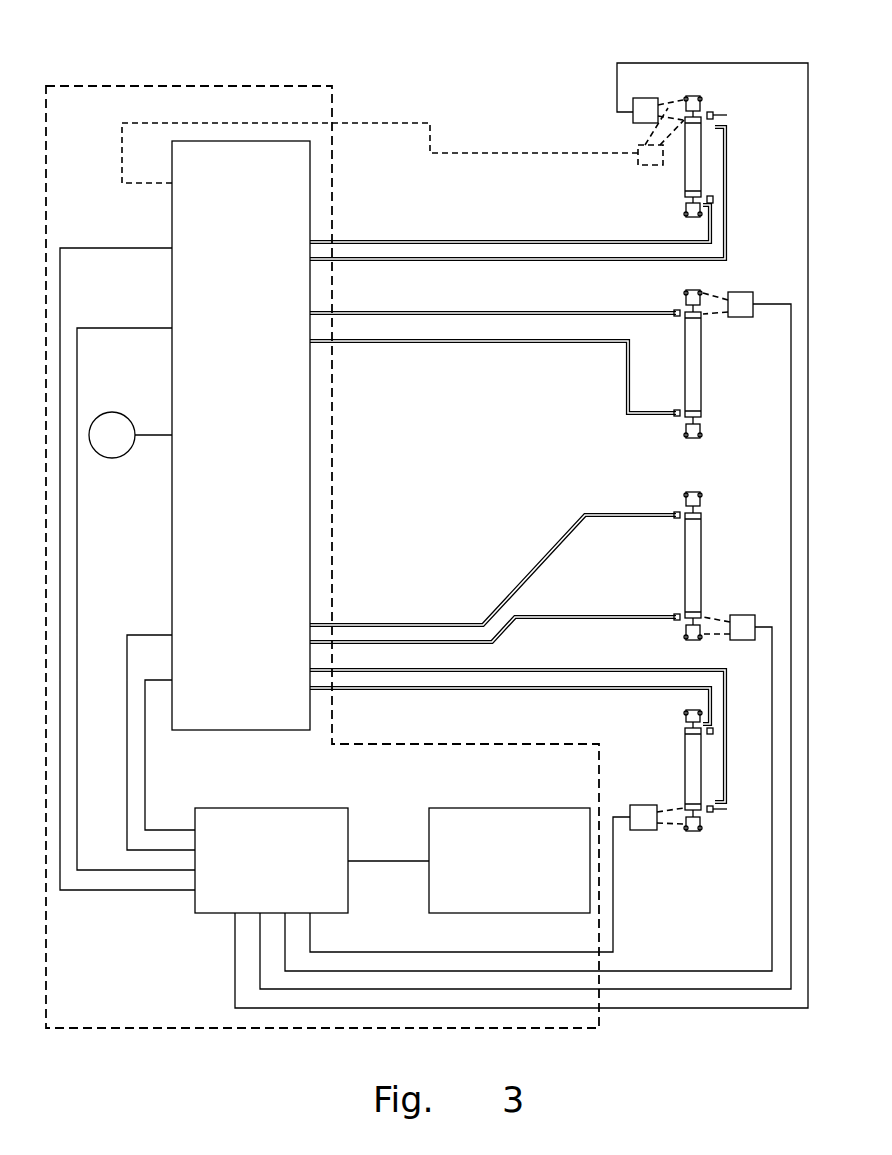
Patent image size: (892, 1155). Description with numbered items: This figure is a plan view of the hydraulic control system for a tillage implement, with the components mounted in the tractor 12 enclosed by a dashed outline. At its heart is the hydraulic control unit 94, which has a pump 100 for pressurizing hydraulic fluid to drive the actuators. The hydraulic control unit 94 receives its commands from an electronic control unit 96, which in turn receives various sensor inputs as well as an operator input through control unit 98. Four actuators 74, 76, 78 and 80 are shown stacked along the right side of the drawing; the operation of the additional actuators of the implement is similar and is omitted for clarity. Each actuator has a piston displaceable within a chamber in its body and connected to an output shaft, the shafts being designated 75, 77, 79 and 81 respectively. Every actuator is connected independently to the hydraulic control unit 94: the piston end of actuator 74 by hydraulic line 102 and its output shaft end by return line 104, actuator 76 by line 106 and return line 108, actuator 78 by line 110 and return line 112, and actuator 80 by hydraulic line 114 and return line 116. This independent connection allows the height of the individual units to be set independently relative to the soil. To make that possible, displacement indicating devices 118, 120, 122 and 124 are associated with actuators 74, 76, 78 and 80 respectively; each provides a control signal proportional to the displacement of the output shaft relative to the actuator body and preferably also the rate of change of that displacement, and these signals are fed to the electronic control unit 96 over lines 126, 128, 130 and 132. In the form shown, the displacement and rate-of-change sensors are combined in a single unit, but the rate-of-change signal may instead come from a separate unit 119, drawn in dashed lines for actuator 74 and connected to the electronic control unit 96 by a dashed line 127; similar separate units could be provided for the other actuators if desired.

The tractor 12 is at (130, 1028).
The actuator 74 is at (688, 177).
The output shaft 75 is at (700, 100).
The actuator 76 is at (701, 375).
The output shaft 77 is at (688, 295).
The actuator 78 is at (701, 550).
The output shaft 79 is at (688, 632).
The actuator 80 is at (688, 750).
The output shaft 81 is at (697, 825).
The hydraulic control unit 94 is at (262, 730).
The electronic control unit 96 is at (215, 913).
The operator input control unit 98 is at (455, 808).
The pump 100 is at (110, 460).
The hydraulic line 102 is at (410, 240).
The return line 104 is at (412, 262).
The line 106 is at (385, 343).
The return line 108 is at (545, 313).
The line 110 is at (555, 545).
The return line 112 is at (568, 615).
The hydraulic line 114 is at (490, 688).
The return line 116 is at (505, 670).
The displacement indicating device 118 is at (633, 118).
The separate unit 119 is at (638, 163).
The displacement indicating device 120 is at (745, 292).
The displacement indicating device 122 is at (743, 615).
The displacement indicating device 124 is at (643, 830).
The line 126 is at (790, 63).
The line 127 is at (470, 153).
The line 128 is at (792, 833).
The line 130 is at (772, 935).
The line 132 is at (432, 952).